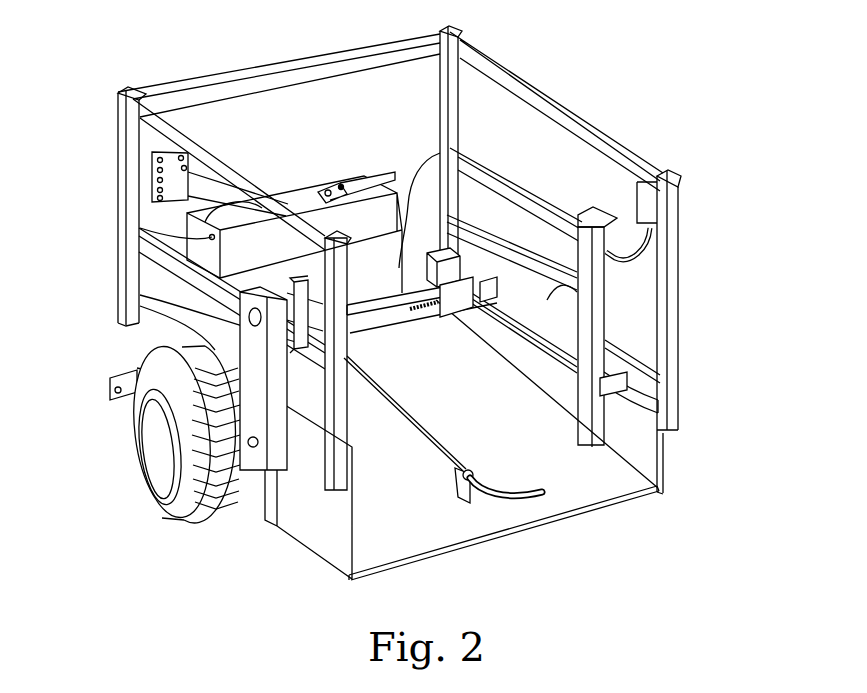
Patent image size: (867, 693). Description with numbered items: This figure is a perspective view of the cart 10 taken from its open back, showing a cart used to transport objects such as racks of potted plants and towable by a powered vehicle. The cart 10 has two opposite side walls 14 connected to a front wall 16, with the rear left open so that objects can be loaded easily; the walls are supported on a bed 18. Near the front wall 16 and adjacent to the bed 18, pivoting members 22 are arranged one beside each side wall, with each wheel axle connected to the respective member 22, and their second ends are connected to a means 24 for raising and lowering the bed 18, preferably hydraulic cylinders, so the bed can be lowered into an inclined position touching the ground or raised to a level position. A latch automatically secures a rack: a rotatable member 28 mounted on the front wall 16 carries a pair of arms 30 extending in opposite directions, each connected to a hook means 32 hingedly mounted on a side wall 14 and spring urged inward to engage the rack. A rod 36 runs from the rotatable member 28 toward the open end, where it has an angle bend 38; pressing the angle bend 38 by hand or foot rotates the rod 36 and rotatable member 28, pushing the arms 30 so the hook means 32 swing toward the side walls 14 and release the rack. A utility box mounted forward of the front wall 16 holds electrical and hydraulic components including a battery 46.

The cart 10 is at (663, 125).
The side walls 14 is at (330, 545).
The front wall 16 is at (400, 262).
The bed 18 is at (590, 492).
The members 22 is at (130, 407).
The means for raising and lowering the bed 24 is at (243, 488).
The rotatable member 28 is at (300, 282).
The arms 30 is at (140, 295).
The hook means 32 is at (462, 258).
The rod 36 is at (413, 428).
The angle bend 38 is at (525, 500).
The battery 46 is at (340, 188).